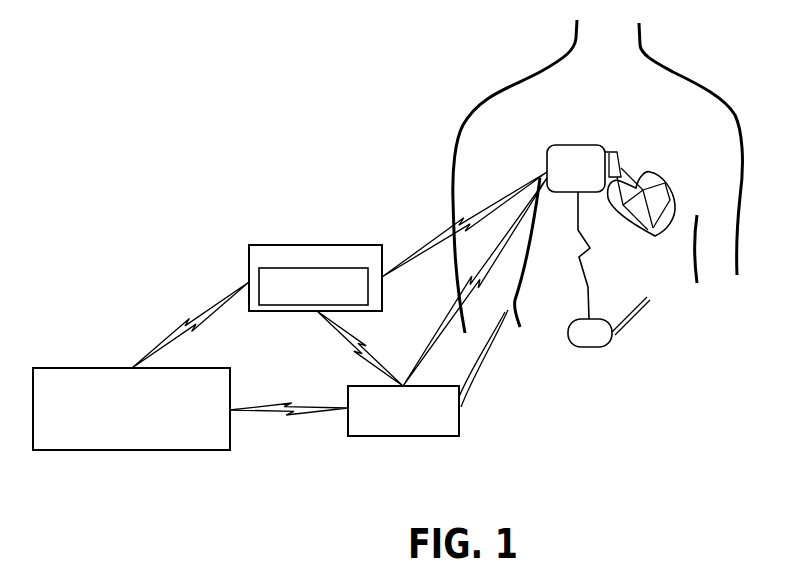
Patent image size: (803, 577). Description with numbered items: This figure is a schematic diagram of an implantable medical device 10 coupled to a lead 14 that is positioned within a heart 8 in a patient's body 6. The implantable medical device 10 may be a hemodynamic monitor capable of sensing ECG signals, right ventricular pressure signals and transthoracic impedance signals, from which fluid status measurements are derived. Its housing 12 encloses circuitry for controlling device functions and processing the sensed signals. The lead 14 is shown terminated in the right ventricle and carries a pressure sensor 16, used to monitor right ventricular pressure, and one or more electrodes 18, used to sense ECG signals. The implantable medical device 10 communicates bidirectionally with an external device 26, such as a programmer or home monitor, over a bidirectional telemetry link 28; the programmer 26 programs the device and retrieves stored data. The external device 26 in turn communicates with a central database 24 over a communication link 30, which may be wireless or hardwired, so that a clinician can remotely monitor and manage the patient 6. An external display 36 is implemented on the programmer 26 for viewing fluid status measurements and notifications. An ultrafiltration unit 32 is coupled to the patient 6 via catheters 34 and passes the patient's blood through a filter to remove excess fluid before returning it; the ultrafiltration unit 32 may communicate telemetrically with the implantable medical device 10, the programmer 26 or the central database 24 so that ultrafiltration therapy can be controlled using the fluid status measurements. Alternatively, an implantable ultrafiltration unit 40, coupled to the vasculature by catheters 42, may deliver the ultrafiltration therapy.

The patient's body 6 is at (708, 88).
The heart 8 is at (660, 173).
The implantable medical device 10 is at (573, 145).
The housing 12 is at (592, 145).
The lead 14 is at (608, 150).
The pressure sensor 16 is at (643, 238).
The electrodes 18 is at (650, 240).
The central database 24 is at (100, 368).
The external device 26 is at (312, 244).
The bidirectional telemetry link 28 is at (428, 248).
The communication link 30 is at (240, 287).
The ultrafiltration unit 32 is at (348, 390).
The catheters 34 is at (480, 363).
The external display 36 is at (358, 300).
The implantable ultrafiltration unit 40 is at (594, 347).
The catheters 42 is at (637, 310).